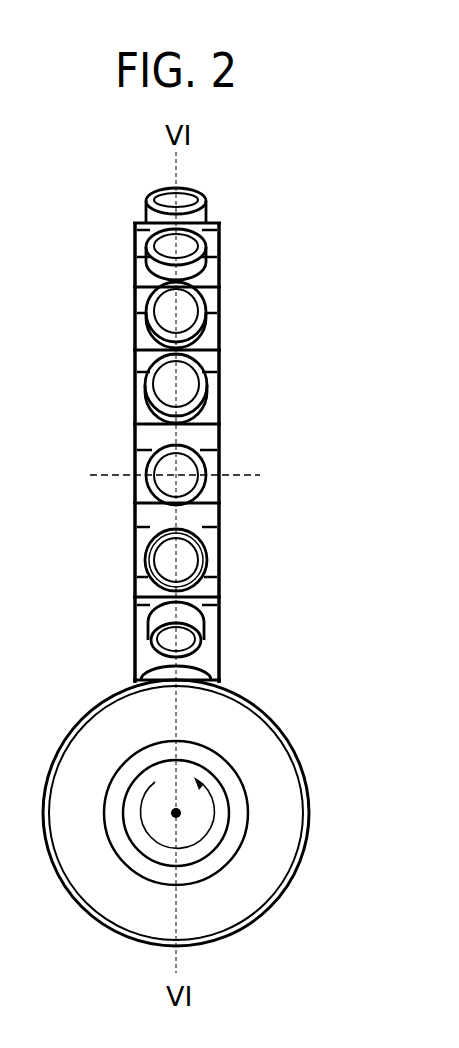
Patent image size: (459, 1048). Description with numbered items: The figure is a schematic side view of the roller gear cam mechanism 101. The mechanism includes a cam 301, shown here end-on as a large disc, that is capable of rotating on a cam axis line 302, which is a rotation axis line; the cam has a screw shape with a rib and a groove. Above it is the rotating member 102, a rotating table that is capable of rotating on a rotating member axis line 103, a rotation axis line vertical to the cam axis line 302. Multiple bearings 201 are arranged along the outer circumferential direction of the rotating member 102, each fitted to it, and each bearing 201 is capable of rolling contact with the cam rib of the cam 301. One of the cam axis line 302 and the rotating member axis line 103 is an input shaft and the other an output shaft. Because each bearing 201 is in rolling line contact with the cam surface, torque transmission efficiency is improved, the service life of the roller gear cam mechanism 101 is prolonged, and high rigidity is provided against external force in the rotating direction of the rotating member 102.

The roller gear cam mechanism 101 is at (244, 262).
The rotating member 102 is at (132, 438).
The rotating member axis line 103 is at (243, 472).
The bearing 201 is at (183, 385).
The cam 301 is at (243, 880).
The cam axis line 302 is at (176, 813).